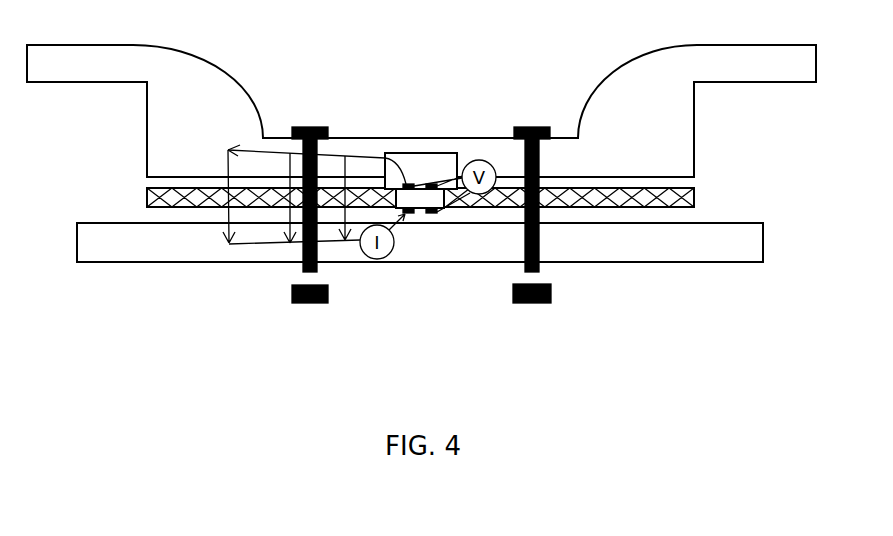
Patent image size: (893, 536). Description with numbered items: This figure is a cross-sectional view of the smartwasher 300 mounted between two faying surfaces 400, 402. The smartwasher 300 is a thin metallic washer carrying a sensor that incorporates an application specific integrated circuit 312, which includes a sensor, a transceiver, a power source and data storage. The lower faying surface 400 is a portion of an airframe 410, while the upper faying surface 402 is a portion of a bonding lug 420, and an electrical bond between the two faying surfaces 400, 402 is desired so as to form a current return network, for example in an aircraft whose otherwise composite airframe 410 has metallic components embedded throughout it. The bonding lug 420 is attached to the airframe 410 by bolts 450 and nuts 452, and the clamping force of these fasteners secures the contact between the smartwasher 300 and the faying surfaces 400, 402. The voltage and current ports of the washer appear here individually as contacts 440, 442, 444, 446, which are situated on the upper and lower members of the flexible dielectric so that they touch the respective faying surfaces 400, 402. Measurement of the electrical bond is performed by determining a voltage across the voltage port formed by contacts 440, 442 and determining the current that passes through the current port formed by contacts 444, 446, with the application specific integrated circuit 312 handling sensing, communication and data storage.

The bonding lug 420 is at (703, 60).
The faying surface 402 is at (150, 183).
The faying surface 400 is at (87, 222).
The airframe 410 is at (747, 242).
The smartwasher 300 is at (147, 193).
The bolts 450 is at (297, 127).
The nuts 452 is at (292, 293).
The application specific integrated circuit 312 is at (422, 153).
The contact 440 is at (438, 186).
The contact 444 is at (405, 184).
The contact 446 is at (408, 214).
The contact 442 is at (437, 213).